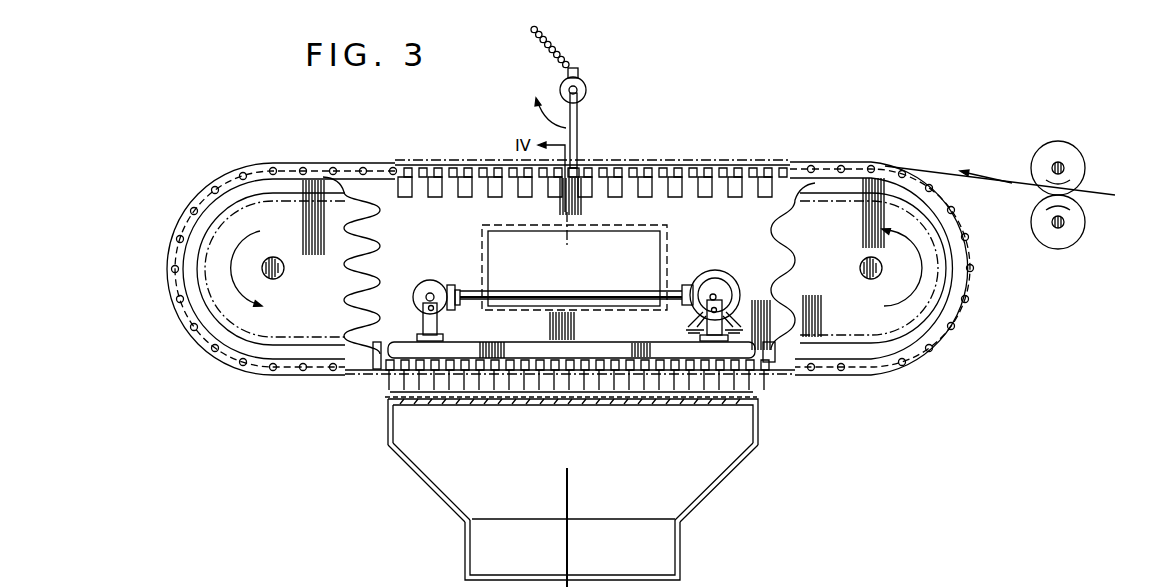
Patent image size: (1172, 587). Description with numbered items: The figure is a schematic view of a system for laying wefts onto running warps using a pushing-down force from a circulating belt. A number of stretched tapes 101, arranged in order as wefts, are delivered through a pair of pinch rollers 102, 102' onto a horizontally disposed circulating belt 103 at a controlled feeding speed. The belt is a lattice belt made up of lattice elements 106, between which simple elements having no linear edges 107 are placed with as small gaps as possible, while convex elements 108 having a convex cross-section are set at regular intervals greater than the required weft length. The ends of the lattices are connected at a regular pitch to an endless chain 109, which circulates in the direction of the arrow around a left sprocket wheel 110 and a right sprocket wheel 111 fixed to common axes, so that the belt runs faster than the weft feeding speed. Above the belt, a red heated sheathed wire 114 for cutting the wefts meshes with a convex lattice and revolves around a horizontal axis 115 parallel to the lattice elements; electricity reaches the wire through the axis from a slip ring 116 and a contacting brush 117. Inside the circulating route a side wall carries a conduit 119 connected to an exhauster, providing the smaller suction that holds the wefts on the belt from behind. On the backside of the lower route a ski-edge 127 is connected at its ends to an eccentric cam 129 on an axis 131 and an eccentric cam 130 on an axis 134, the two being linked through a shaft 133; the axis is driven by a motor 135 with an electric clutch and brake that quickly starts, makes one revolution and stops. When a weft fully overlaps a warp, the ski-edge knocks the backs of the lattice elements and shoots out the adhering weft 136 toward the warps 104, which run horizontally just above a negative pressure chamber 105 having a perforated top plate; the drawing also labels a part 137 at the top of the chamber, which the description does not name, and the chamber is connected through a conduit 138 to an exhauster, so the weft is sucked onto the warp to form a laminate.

The stretched tapes 101 is at (1107, 195).
The pinch roller 102 is at (1058, 239).
The pinch roller 102' is at (1058, 155).
The circulating belt 103 is at (795, 162).
The warps 104 is at (758, 402).
The negative pressure chamber 105 is at (432, 470).
The lattice elements 106 is at (678, 165).
The simple elements having no linear edges 107 is at (697, 165).
The convex elements 108 is at (577, 168).
The endless chain 109 is at (316, 164).
The sprocket wheel 110 is at (223, 307).
The sprocket wheel 111 is at (935, 293).
The red heated sheathed wire 114 is at (576, 136).
The horizontal axis 115 is at (562, 90).
The slip ring 116 is at (587, 90).
The contacting brush 117 is at (578, 72).
The conduit 119 is at (520, 238).
The ski-edge 127 is at (752, 358).
The eccentric cam 129 is at (423, 288).
The eccentric cam 130 is at (707, 283).
The axis 131 is at (437, 310).
The shaft 133 is at (537, 291).
The axis 134 is at (688, 316).
The motor 135 is at (748, 294).
The adhering weft 136 is at (392, 393).
The hopper lining 137 is at (630, 404).
The conduit 138 is at (662, 543).